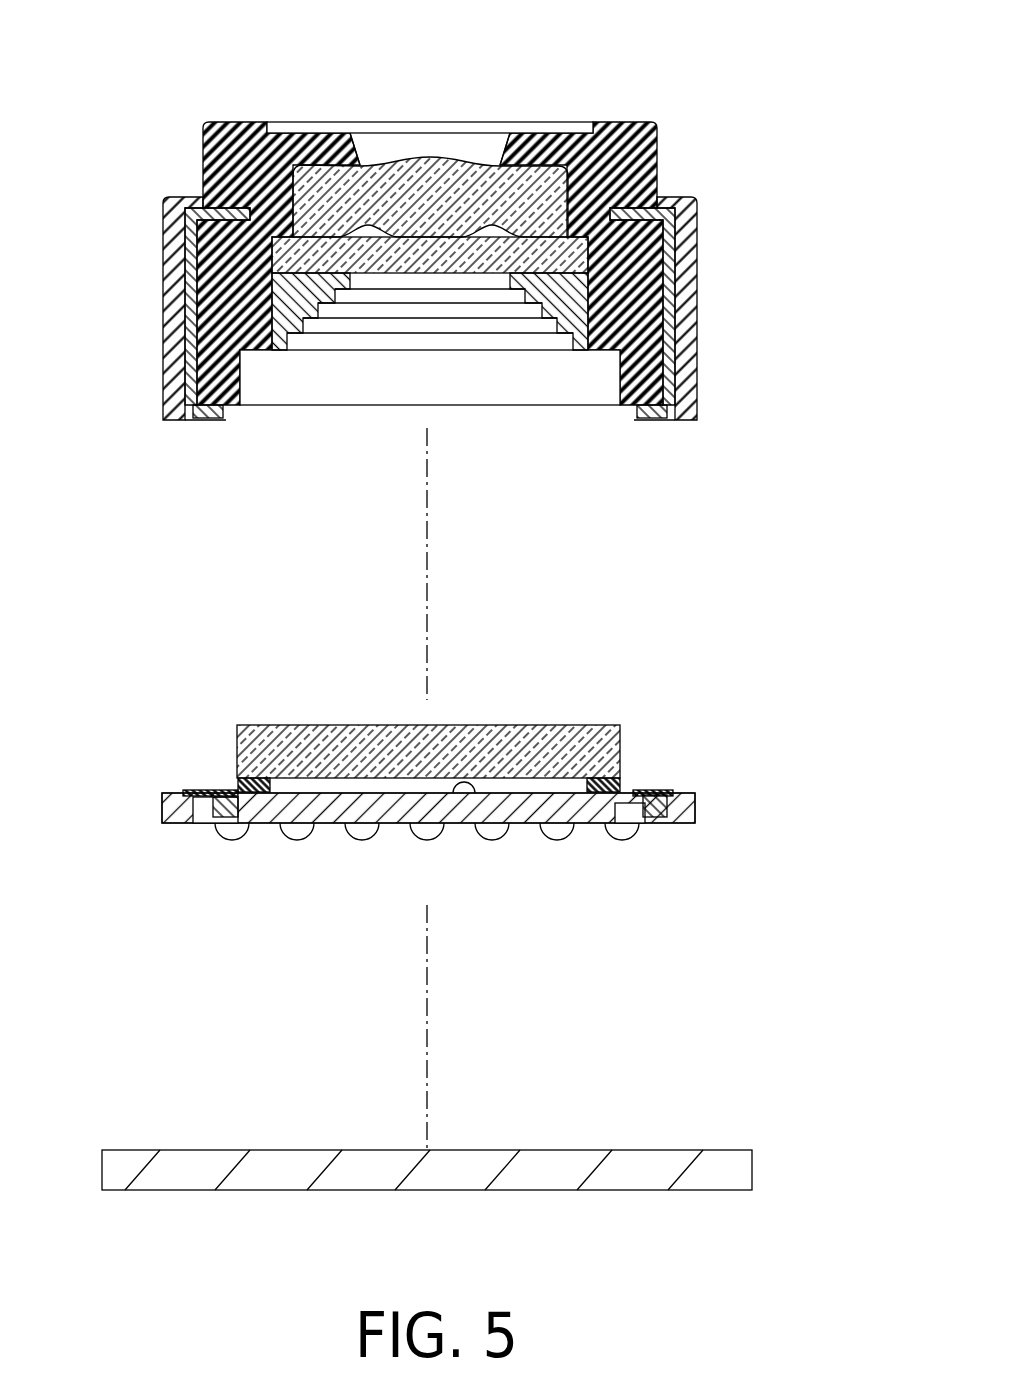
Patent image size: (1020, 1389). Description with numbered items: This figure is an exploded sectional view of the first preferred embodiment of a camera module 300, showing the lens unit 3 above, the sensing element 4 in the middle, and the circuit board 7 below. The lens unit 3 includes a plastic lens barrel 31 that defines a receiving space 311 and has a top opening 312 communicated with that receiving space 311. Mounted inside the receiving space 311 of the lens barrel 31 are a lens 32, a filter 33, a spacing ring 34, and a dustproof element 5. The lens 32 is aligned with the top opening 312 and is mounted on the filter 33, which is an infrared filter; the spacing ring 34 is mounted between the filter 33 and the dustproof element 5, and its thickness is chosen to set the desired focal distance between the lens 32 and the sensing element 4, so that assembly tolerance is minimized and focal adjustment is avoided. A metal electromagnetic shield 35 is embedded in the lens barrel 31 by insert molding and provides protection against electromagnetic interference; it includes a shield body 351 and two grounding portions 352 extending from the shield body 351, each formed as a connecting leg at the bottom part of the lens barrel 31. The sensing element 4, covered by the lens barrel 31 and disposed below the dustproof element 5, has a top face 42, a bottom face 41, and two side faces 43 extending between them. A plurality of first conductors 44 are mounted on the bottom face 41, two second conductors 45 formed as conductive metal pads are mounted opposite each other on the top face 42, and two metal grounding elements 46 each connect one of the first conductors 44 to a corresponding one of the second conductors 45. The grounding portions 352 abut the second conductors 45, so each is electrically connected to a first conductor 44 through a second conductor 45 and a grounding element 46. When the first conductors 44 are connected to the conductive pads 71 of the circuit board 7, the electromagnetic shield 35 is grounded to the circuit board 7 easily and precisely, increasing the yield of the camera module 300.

The camera module 300 is at (552, 92).
The lens unit 3 is at (180, 158).
The lens barrel 31 is at (635, 147).
The receiving space 311 is at (357, 318).
The top opening 312 is at (386, 148).
The lens 32 is at (560, 184).
The filter 33 is at (297, 262).
The spacing ring 34 is at (297, 308).
The electromagnetic shield 35 is at (698, 305).
The shield body 351 is at (697, 228).
The grounding portions 352 is at (200, 410).
The sensing element 4 is at (322, 800).
The bottom face 41 is at (679, 826).
The top face 42 is at (455, 796).
The side faces 43 is at (190, 805).
The first conductors 44 is at (298, 832).
The second conductors 45 is at (238, 798).
The grounding elements 46 is at (205, 797).
The dustproof element 5 is at (402, 755).
The circuit board 7 is at (122, 1172).
The conductive pads 71 is at (232, 1150).